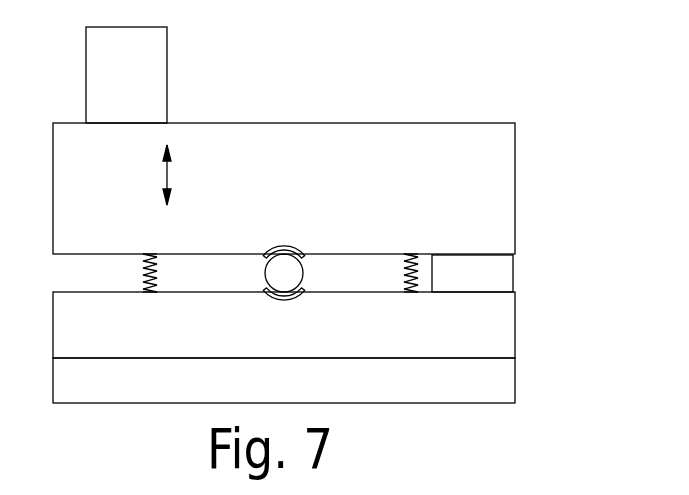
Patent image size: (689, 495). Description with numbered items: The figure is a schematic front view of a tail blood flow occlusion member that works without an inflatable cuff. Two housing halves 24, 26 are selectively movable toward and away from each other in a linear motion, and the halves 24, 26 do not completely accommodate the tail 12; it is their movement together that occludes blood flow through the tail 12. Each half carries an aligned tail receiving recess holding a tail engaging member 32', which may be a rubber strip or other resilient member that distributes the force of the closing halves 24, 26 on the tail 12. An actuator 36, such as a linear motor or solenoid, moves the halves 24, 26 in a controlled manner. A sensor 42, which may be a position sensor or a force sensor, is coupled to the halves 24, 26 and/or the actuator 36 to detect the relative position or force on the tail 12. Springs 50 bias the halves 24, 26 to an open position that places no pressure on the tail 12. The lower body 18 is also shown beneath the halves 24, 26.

The tail 12 is at (301, 273).
The base 18 is at (381, 392).
The housing half 24 is at (396, 229).
The housing half 26 is at (449, 344).
The tail engaging member 32' is at (215, 245).
The actuator 36 is at (156, 89).
The sensor 42 is at (484, 286).
The springs 50 is at (417, 258).